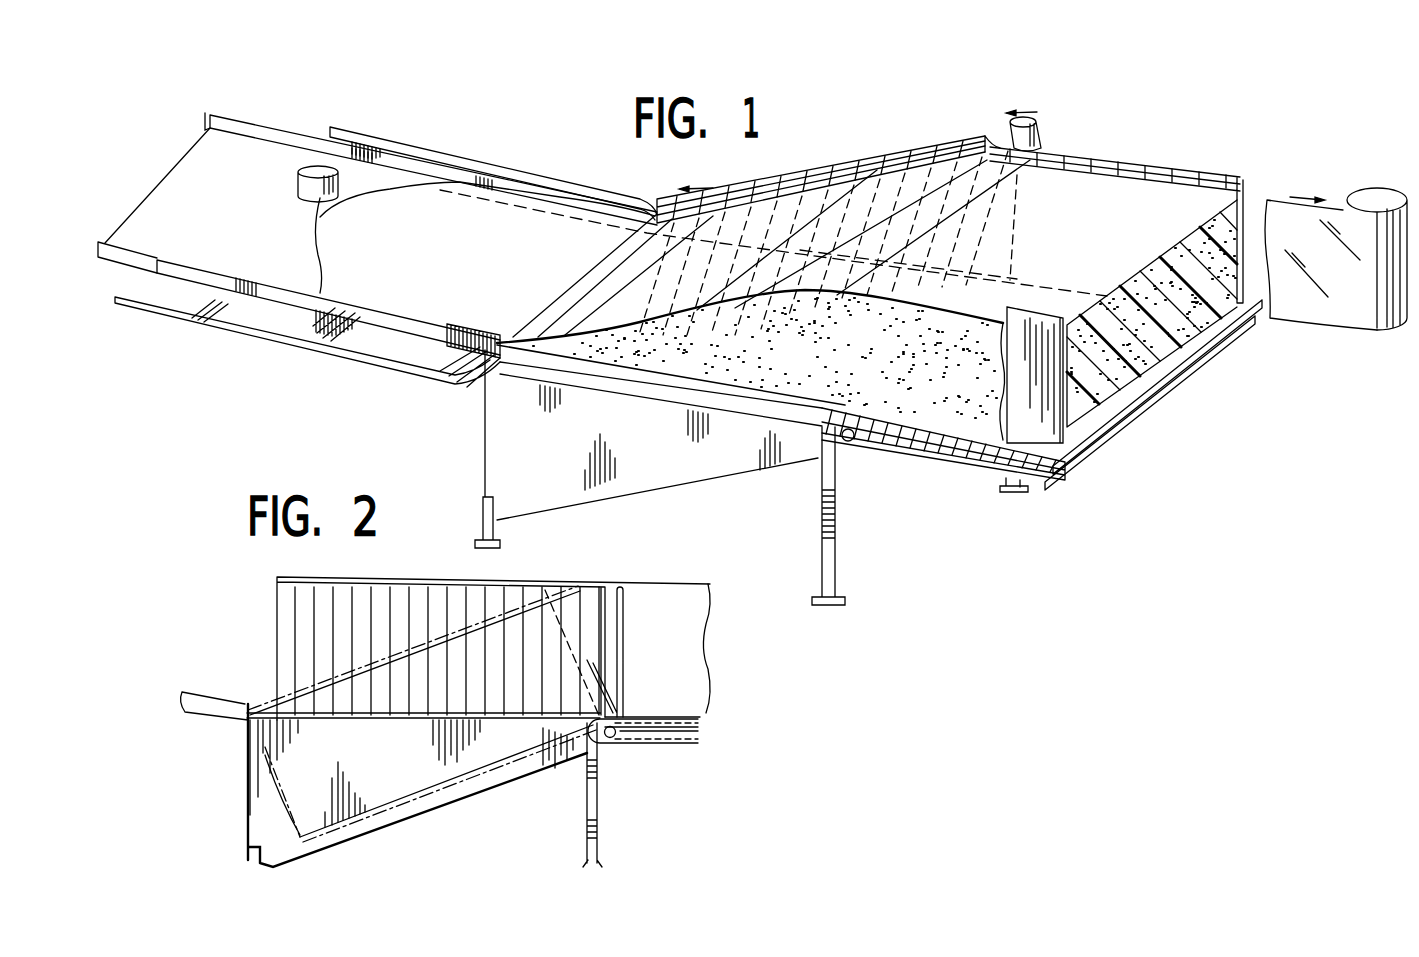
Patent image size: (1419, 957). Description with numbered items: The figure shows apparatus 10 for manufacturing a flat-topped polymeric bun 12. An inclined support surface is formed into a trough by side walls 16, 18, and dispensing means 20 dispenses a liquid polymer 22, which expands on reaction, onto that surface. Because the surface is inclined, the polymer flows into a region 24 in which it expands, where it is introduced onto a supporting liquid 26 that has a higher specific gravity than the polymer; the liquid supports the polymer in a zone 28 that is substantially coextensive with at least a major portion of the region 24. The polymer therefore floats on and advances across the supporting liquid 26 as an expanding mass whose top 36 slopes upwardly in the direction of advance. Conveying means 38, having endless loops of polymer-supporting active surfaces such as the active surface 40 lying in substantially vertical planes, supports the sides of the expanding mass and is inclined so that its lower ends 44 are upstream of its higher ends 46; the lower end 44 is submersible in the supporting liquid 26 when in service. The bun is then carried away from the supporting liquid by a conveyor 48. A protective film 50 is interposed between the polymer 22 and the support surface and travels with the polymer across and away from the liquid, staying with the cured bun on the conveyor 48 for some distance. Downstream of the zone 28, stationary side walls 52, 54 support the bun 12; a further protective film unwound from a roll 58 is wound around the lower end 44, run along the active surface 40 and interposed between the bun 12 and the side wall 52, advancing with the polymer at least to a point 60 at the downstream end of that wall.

In FIG. 1, the apparatus 10 is at (534, 153).
In FIG. 1, the flat-topped polymeric bun 12 is at (1177, 332).
In FIG. 1, the side wall 16 is at (318, 130).
In FIG. 1, the side wall 18 is at (178, 266).
In FIG. 1, the dispensing means 20 is at (298, 185).
In FIG. 1, the liquid polymer 22 is at (330, 233).
In FIG. 1, the region 24 is at (659, 358).
In FIG. 1, the supporting liquid 26 is at (485, 398).
In FIG. 1, the zone 28 is at (822, 447).
In FIG. 1, the top 36 is at (633, 278).
In FIG. 1, the conveying means 38 is at (807, 171).
In FIG. 2, the conveying means 38 is at (430, 584).
In FIG. 1, the active surface 40 is at (873, 150).
In FIG. 1, the lower end 44 is at (654, 299).
In FIG. 2, the lower end 44 is at (262, 769).
In FIG. 1, the higher end 46 is at (1008, 190).
In FIG. 2, the higher end 46 is at (579, 592).
In FIG. 1, the conveyor 48 is at (945, 455).
In FIG. 2, the conveyor 48 is at (653, 745).
In FIG. 1, the protective film 50 is at (237, 124).
In FIG. 2, the protective film 50 is at (218, 695).
In FIG. 1, the stationary side wall 52 is at (1157, 166).
In FIG. 1, the stationary side wall 54 is at (1090, 412).
In FIG. 1, the roll 58 is at (1040, 137).
In FIG. 2, the point 60 is at (601, 721).